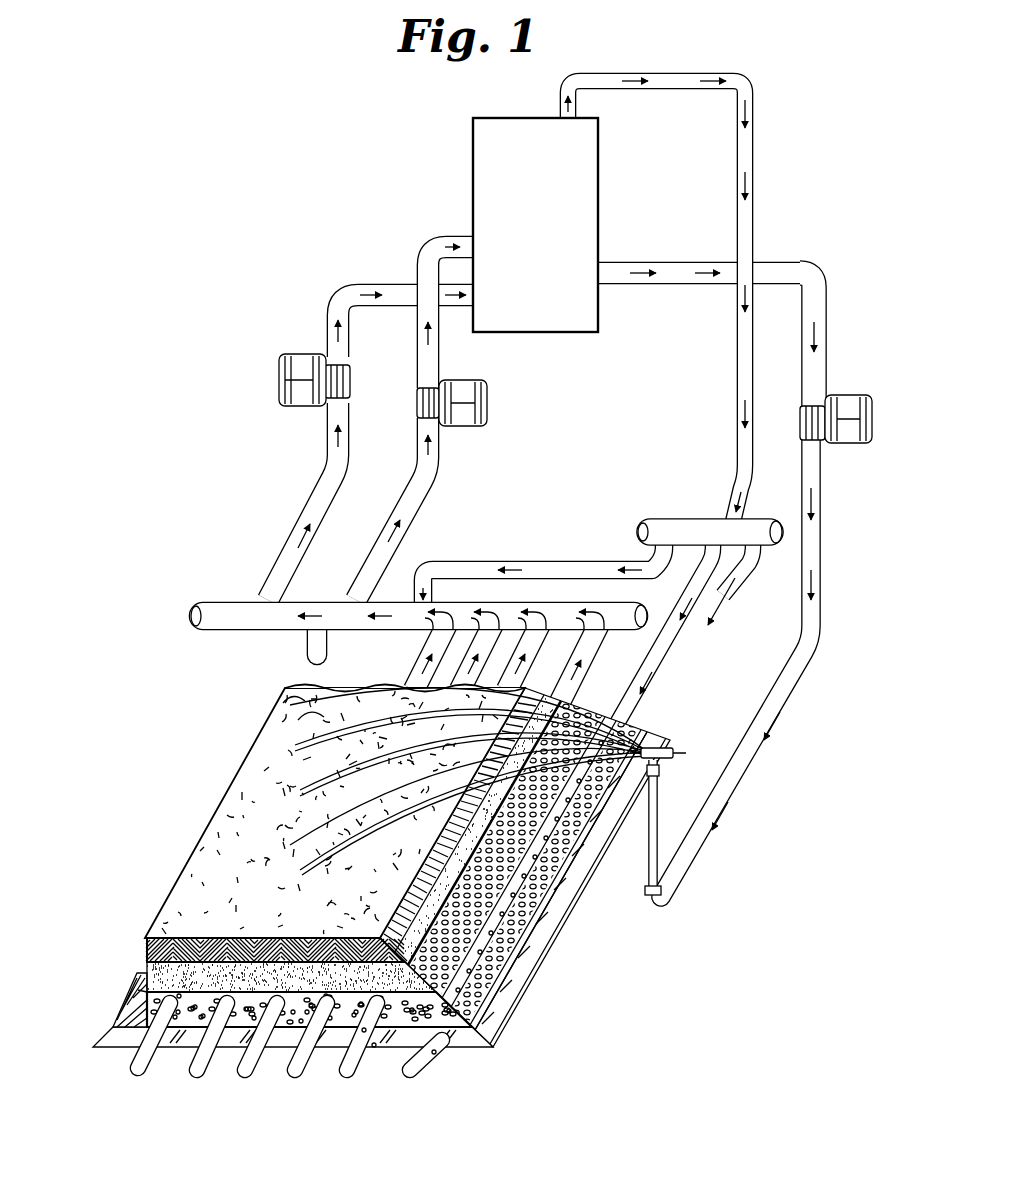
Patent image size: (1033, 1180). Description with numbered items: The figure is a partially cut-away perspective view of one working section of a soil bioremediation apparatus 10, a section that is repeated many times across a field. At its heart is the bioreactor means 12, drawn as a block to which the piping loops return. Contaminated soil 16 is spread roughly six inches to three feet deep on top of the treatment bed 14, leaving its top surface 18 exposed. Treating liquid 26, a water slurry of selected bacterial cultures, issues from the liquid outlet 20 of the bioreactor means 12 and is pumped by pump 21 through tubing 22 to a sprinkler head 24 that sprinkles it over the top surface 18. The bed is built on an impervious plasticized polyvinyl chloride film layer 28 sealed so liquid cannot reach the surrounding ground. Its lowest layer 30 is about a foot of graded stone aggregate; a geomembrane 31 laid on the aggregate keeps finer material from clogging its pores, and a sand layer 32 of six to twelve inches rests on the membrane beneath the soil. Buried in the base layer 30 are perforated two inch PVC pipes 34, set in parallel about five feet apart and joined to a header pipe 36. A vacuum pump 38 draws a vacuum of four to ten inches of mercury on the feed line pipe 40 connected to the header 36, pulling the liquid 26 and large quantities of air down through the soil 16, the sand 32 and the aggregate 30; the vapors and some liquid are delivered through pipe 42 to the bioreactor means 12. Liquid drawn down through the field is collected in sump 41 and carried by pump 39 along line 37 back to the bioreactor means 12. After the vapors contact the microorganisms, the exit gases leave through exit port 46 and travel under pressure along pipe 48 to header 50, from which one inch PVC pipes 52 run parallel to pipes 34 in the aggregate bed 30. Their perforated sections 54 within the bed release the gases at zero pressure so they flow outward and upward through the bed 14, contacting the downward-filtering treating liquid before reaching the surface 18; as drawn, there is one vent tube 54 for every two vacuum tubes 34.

The plant growing system 10 is at (298, 467).
The bioreactor means 12 is at (473, 125).
The treatment bed 14 is at (353, 905).
The contaminated soil 16 is at (145, 943).
The top surface 18 is at (240, 800).
The liquid outlet 20 is at (603, 285).
The pump 21 is at (868, 442).
The tubing 22 is at (826, 332).
The sprinkler head 24 is at (670, 760).
The treating liquid 26 is at (300, 717).
The impervious plasticized polyvinyl chloride film layer 28 is at (525, 984).
The base aggregate layer 30 is at (128, 1014).
The geomembrane 31 is at (145, 994).
The sand layer 32 is at (145, 965).
The perforated PVC pipes 34 is at (256, 1078).
The header pipe 36 is at (419, 640).
The line 37 is at (418, 512).
The vacuum pump 38 is at (290, 388).
The pump 39 is at (489, 400).
The feed line pipe 40 is at (305, 511).
The sump 41 is at (302, 649).
The pipe 42 is at (380, 292).
The exit port 46 is at (583, 100).
The pipe 48 is at (738, 378).
The header 50 is at (694, 520).
The PVC pipes 52 is at (498, 560).
The perforated sections 54 is at (149, 1074).